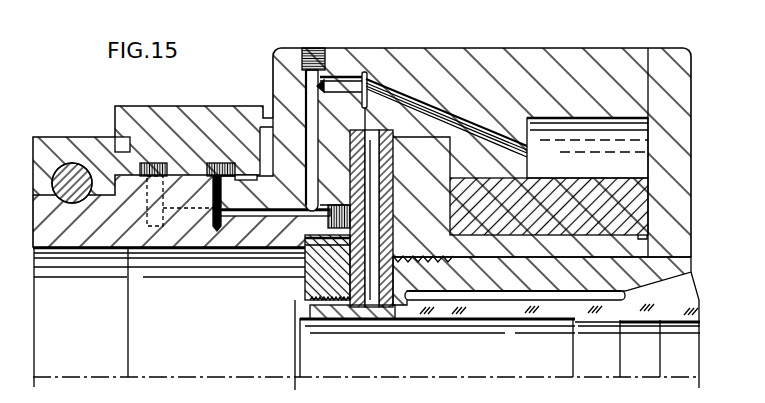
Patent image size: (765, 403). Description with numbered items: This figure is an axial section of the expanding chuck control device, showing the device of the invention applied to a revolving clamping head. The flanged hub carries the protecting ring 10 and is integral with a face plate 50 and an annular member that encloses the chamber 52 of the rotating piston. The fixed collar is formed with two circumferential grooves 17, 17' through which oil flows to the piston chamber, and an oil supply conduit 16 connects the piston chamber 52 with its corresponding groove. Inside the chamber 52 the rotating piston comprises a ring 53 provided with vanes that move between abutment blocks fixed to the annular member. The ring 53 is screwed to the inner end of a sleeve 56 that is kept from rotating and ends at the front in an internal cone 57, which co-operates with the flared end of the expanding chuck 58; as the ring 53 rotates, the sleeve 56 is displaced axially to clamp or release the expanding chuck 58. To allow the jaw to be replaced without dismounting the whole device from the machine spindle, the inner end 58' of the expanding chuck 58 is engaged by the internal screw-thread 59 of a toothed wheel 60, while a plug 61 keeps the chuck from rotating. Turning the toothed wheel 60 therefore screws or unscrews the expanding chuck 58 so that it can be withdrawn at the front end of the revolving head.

The protecting ring 10 is at (70, 163).
The circumferential groove 17' is at (176, 154).
The circumferential groove 17 is at (234, 158).
The oil supply conduit 16 is at (500, 130).
The face plate 50 is at (662, 140).
The chamber of the rotating piston 52 is at (560, 163).
The ring 53 is at (432, 243).
The sleeve 56 is at (503, 272).
The internal cone 57 is at (665, 283).
The expanding chuck 58 is at (637, 342).
The inner end of the expanding chuck 58' is at (437, 342).
The internal screw-thread 59 is at (310, 310).
The toothed wheel 60 is at (322, 268).
The plug 61 is at (375, 307).